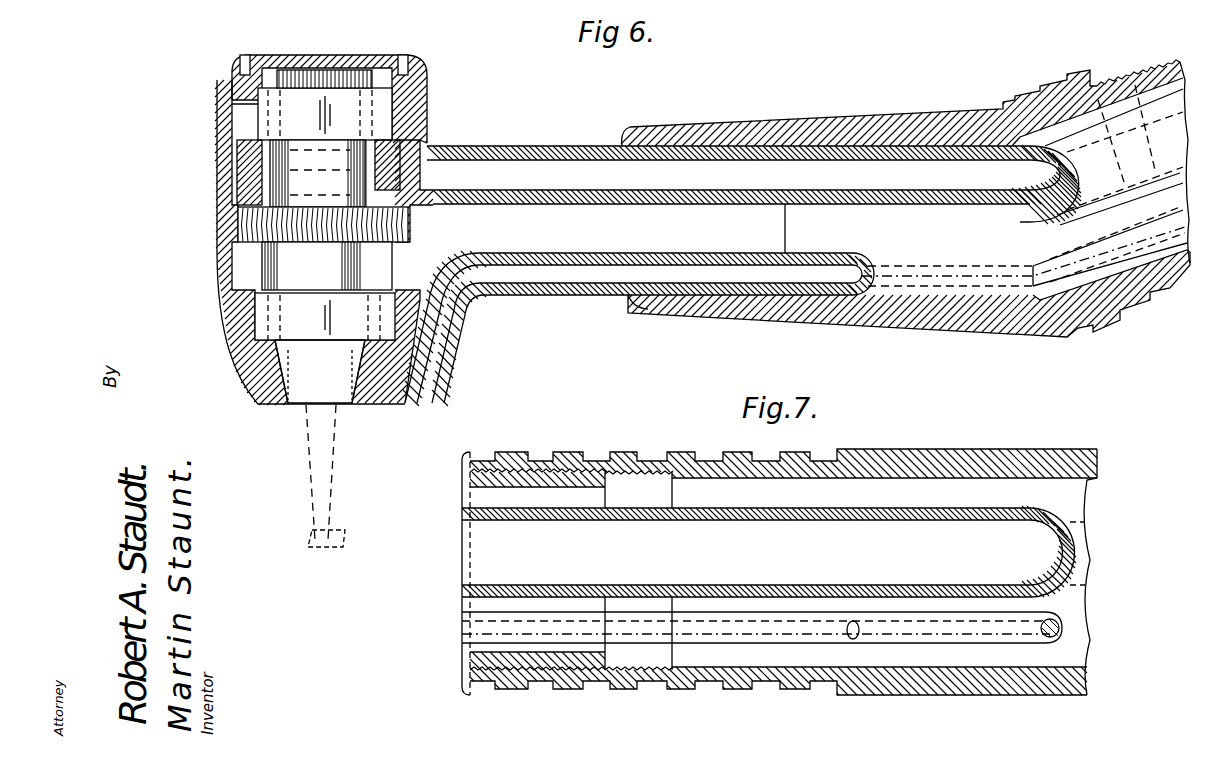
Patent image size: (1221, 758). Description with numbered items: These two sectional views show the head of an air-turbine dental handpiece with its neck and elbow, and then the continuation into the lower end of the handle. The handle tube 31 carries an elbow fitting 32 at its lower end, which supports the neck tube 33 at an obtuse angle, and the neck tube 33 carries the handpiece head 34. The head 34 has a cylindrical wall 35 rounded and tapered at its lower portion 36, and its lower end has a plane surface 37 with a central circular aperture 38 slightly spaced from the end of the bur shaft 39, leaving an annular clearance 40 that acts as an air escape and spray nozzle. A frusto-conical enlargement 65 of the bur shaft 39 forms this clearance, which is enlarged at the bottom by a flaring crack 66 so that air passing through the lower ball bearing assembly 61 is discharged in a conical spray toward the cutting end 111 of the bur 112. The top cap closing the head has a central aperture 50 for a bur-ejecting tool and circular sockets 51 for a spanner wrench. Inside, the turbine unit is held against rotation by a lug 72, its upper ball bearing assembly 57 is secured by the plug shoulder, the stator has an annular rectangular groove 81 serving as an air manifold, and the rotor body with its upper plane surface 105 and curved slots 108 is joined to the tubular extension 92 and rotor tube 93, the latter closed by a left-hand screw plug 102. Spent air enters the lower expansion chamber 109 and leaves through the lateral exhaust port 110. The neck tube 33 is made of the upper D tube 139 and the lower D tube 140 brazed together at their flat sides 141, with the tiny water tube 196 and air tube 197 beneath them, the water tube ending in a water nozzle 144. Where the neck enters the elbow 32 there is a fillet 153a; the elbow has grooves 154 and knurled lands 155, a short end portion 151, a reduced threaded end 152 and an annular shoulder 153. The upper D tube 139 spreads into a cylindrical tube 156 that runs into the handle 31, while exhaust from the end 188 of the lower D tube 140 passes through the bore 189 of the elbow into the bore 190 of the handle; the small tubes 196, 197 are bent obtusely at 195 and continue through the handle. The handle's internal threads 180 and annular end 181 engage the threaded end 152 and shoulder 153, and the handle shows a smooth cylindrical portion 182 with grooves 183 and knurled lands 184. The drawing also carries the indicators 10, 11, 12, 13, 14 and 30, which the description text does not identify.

In FIG. 6, the section line 10 is at (632, 135).
In FIG. 6, the section line 11 is at (189, 87).
In FIG. 6, the section line 12 is at (189, 129).
In FIG. 6, the section line 13 is at (156, 189).
In FIG. 6, the section line 14 is at (156, 222).
In FIG. 6, the handpiece 30 is at (981, 100).
In FIG. 7, the handle tube 31 is at (983, 444).
In FIG. 6, the elbow fitting 32 is at (848, 112).
In FIG. 6, the neck tube 33 is at (537, 141).
In FIG. 6, the handpiece head 34 is at (427, 100).
In FIG. 6, the cylindrical wall 35 is at (235, 229).
In FIG. 6, the lower portion 36 is at (228, 361).
In FIG. 6, the plane surface 37 is at (262, 405).
In FIG. 6, the central circular aperture 38 is at (292, 406).
In FIG. 6, the bur shaft 39 is at (350, 406).
In FIG. 6, the annular clearance 40 is at (280, 405).
In FIG. 6, the central aperture 50 is at (322, 62).
In FIG. 6, the circular sockets 51 is at (245, 56).
In FIG. 6, the upper ball bearing assembly 57 is at (385, 112).
In FIG. 6, the lower ball bearing assembly 61 is at (395, 330).
In FIG. 6, the enlargement 65 is at (285, 360).
In FIG. 6, the flaring crack 66 is at (285, 400).
In FIG. 6, the lug 72 is at (240, 156).
In FIG. 6, the annular rectangular groove 81 is at (420, 161).
In FIG. 6, the tubular extension 92 is at (258, 283).
In FIG. 6, the rotor tube 93 is at (275, 172).
In FIG. 6, the screw plug 102 is at (345, 78).
In FIG. 6, the upper plane surface 105 is at (398, 178).
In FIG. 6, the curved slot 108 is at (268, 225).
In FIG. 6, the lower expansion chamber 109 is at (258, 264).
In FIG. 6, the lateral exhaust port 110 is at (412, 265).
In FIG. 6, the cutting end 111 is at (338, 540).
In FIG. 6, the bur 112 is at (322, 470).
In FIG. 6, the upper D tube 139 is at (565, 146).
In FIG. 6, the lower D tube 140 is at (638, 310).
In FIG. 6, the brazed flat sides 141 is at (540, 184).
In FIG. 6, the water nozzle 144 is at (420, 405).
In FIG. 6, the short end portion 151 is at (1118, 316).
In FIG. 6, the reduced threaded end 152 is at (1190, 275).
In FIG. 7, the reduced threaded end 152 is at (548, 468).
In FIG. 6, the annular shoulder 153 is at (1172, 300).
In FIG. 7, the annular shoulder 153 is at (480, 458).
In FIG. 6, the fillet 153a is at (628, 297).
In FIG. 6, the grooves 154 is at (1028, 100).
In FIG. 6, the knurled lands 155 is at (1105, 333).
In FIG. 6, the cylindrical tube 156 is at (1140, 125).
In FIG. 7, the cylindrical tube 156 is at (772, 530).
In FIG. 7, the internal threads 180 is at (648, 490).
In FIG. 7, the annular end 181 is at (458, 458).
In FIG. 7, the smooth cylindrical portion 182 is at (1018, 449).
In FIG. 7, the grooves 183 is at (705, 460).
In FIG. 7, the knurled lands 184 is at (628, 460).
In FIG. 6, the end 188 is at (786, 231).
In FIG. 6, the bore 189 is at (960, 298).
In FIG. 7, the bore 190 is at (892, 490).
In FIG. 6, the obtuse bend 195 is at (1030, 268).
In FIG. 7, the water tube 196 is at (852, 632).
In FIG. 7, the air tube 197 is at (932, 634).